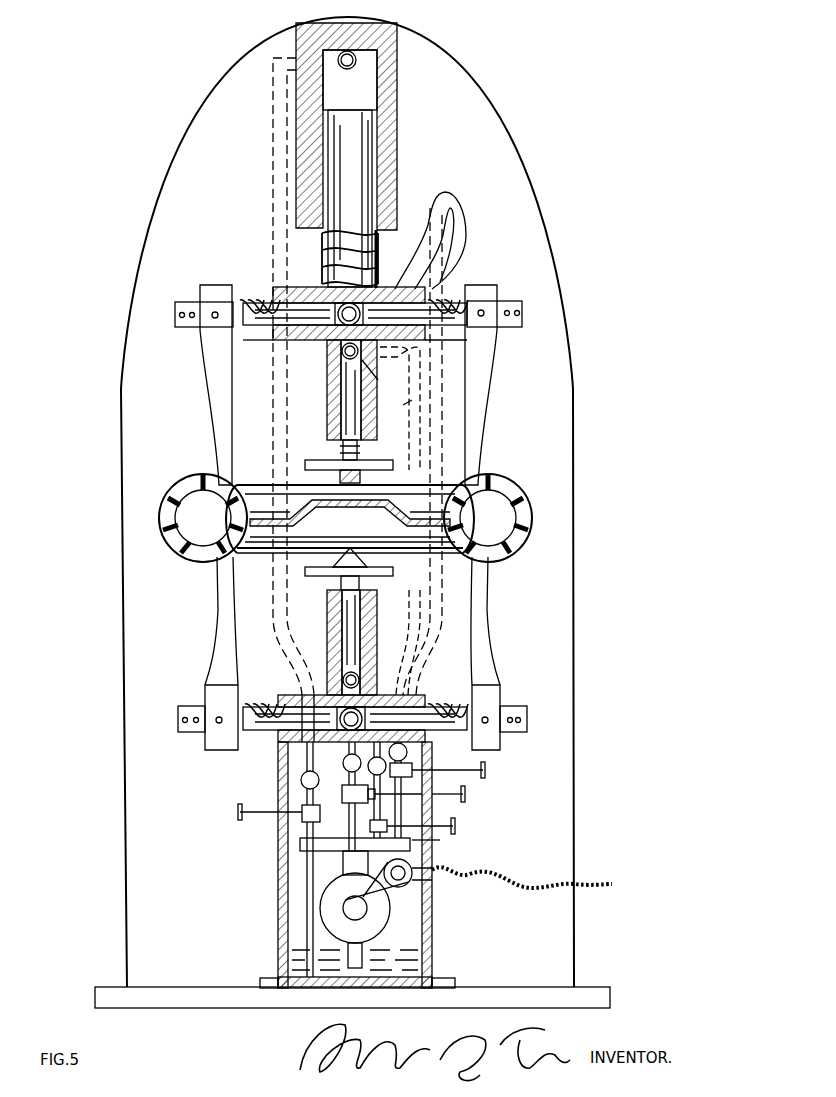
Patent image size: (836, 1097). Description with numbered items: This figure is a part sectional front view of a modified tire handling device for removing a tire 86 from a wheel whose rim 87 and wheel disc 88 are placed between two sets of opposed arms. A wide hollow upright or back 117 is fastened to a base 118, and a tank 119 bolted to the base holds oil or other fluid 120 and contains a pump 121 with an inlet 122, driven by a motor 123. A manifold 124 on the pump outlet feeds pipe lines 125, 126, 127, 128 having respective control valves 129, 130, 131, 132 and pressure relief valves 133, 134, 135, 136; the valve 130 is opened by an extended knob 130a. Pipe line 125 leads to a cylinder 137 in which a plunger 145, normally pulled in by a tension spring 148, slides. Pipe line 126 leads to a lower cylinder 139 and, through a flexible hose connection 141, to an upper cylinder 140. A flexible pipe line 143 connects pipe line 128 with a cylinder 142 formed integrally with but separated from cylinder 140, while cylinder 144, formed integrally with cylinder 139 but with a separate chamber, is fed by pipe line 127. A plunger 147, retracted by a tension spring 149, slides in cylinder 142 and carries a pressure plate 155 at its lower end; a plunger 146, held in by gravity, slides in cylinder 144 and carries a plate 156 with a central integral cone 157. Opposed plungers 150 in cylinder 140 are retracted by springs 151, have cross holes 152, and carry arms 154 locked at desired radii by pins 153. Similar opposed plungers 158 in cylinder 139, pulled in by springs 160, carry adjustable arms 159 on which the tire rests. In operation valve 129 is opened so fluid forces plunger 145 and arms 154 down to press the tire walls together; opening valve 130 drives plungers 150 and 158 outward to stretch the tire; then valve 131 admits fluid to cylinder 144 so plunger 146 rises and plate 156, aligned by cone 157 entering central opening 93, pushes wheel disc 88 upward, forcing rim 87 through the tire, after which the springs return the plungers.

The tire 86 is at (532, 512).
The rim 87 is at (455, 535).
The wheel disc 88 is at (350, 519).
The central opening 93 is at (350, 513).
The hollow upright or back 117 is at (575, 755).
The base 118 is at (600, 985).
The tank 119 is at (432, 920).
The fluid 120 is at (280, 955).
The pump 121 is at (330, 918).
The inlet 122 is at (365, 958).
The motor 123 is at (425, 865).
The manifold 124 is at (300, 851).
The pipe line 125 is at (272, 412).
The pipe line 126 is at (437, 463).
The pipe line 127 is at (455, 826).
The pipe line 128 is at (420, 665).
The control valve 129 is at (300, 805).
The control valve 130 is at (348, 800).
The extended knob 130a is at (470, 800).
The control valve 131 is at (348, 868).
The control valve 132 is at (432, 777).
The pressure relief valve 133 is at (300, 778).
The pressure relief valve 134 is at (348, 760).
The pressure relief valve 135 is at (370, 776).
The pressure relief valve 136 is at (410, 752).
The cylinder 137 is at (367, 80).
The cylinder 139 is at (340, 712).
The cylinder 140 is at (335, 330).
The flexible hose connection 141 is at (467, 243).
The cylinder 142 is at (385, 376).
The flexible pipe line 143 is at (395, 409).
The cylinder 144 is at (377, 660).
The plunger 145 is at (382, 170).
The plunger 146 is at (377, 612).
The plunger 147 is at (340, 410).
The tension spring 148 is at (323, 248).
The tension spring 149 is at (360, 462).
The plungers 150 is at (270, 338).
The springs 151 is at (256, 298).
The cross holes 152 is at (182, 305).
The pins 153 is at (214, 318).
The arms 154 is at (208, 405).
The pressure plate 155 is at (380, 472).
The plate 156 is at (315, 580).
The cone 157 is at (355, 548).
The plungers 158 is at (290, 697).
The arms 159 is at (215, 605).
The springs 160 is at (240, 704).